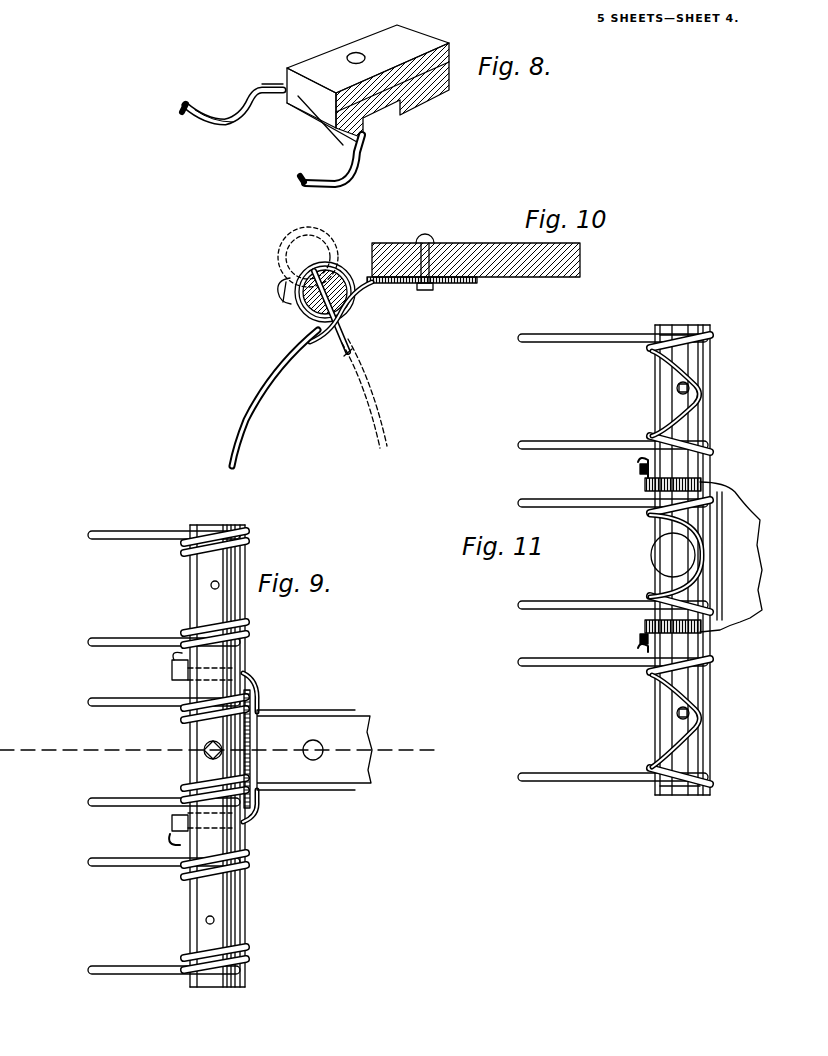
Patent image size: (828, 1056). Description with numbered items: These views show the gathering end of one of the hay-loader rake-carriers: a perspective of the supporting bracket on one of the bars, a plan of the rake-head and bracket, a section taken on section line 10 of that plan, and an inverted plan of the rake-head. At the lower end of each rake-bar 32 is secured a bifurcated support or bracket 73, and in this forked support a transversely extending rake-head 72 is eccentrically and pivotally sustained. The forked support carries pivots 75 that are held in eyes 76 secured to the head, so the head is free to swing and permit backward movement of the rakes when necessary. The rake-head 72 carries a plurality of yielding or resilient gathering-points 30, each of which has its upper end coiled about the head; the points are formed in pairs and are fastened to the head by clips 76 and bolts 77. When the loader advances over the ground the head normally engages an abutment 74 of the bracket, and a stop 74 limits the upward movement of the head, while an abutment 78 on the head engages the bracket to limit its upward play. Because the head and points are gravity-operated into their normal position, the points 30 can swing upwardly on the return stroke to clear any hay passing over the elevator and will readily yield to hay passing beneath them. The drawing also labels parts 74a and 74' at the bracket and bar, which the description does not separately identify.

In FIG. 9, the section line 10 is at (226, 750).
In FIG. 10, the gathering-points 30 is at (252, 418).
In FIG. 9, the gathering-points 30 is at (138, 572).
In FIG. 11, the gathering-points 30 is at (554, 440).
In FIG. 8, the rake-bar 32 is at (441, 80).
In FIG. 10, the rake-bar 32 is at (512, 278).
In FIG. 9, the rake-bar 32 is at (362, 722).
In FIG. 10, the rake-head 72 is at (338, 262).
In FIG. 9, the rake-head 72 is at (237, 614).
In FIG. 11, the rake-head 72 is at (702, 708).
In FIG. 8, the bifurcated support or bracket 73 is at (234, 97).
In FIG. 8, the abutment or stop 74 is at (298, 148).
In FIG. 10, the abutment or stop 74 is at (357, 312).
In FIG. 9, the abutment or stop 74 is at (267, 734).
In FIG. 10, the bolt / bolt hole 74a is at (427, 238).
In FIG. 9, the bolt / bolt hole 74a is at (312, 762).
In FIG. 10, the clamp plate 74' is at (422, 304).
In FIG. 8, the pivots 75 is at (186, 115).
In FIG. 10, the pivots 75 is at (290, 302).
In FIG. 9, the pivots 75 is at (168, 843).
In FIG. 11, the pivots 75 is at (638, 466).
In FIG. 10, the eyes or clips 76 is at (283, 290).
In FIG. 9, the eyes or clips 76 is at (172, 668).
In FIG. 11, the eyes or clips 76 is at (688, 359).
In FIG. 11, the bolts 77 is at (690, 386).
In FIG. 10, the abutment 78 is at (354, 352).
In FIG. 11, the abutment 78 is at (698, 556).